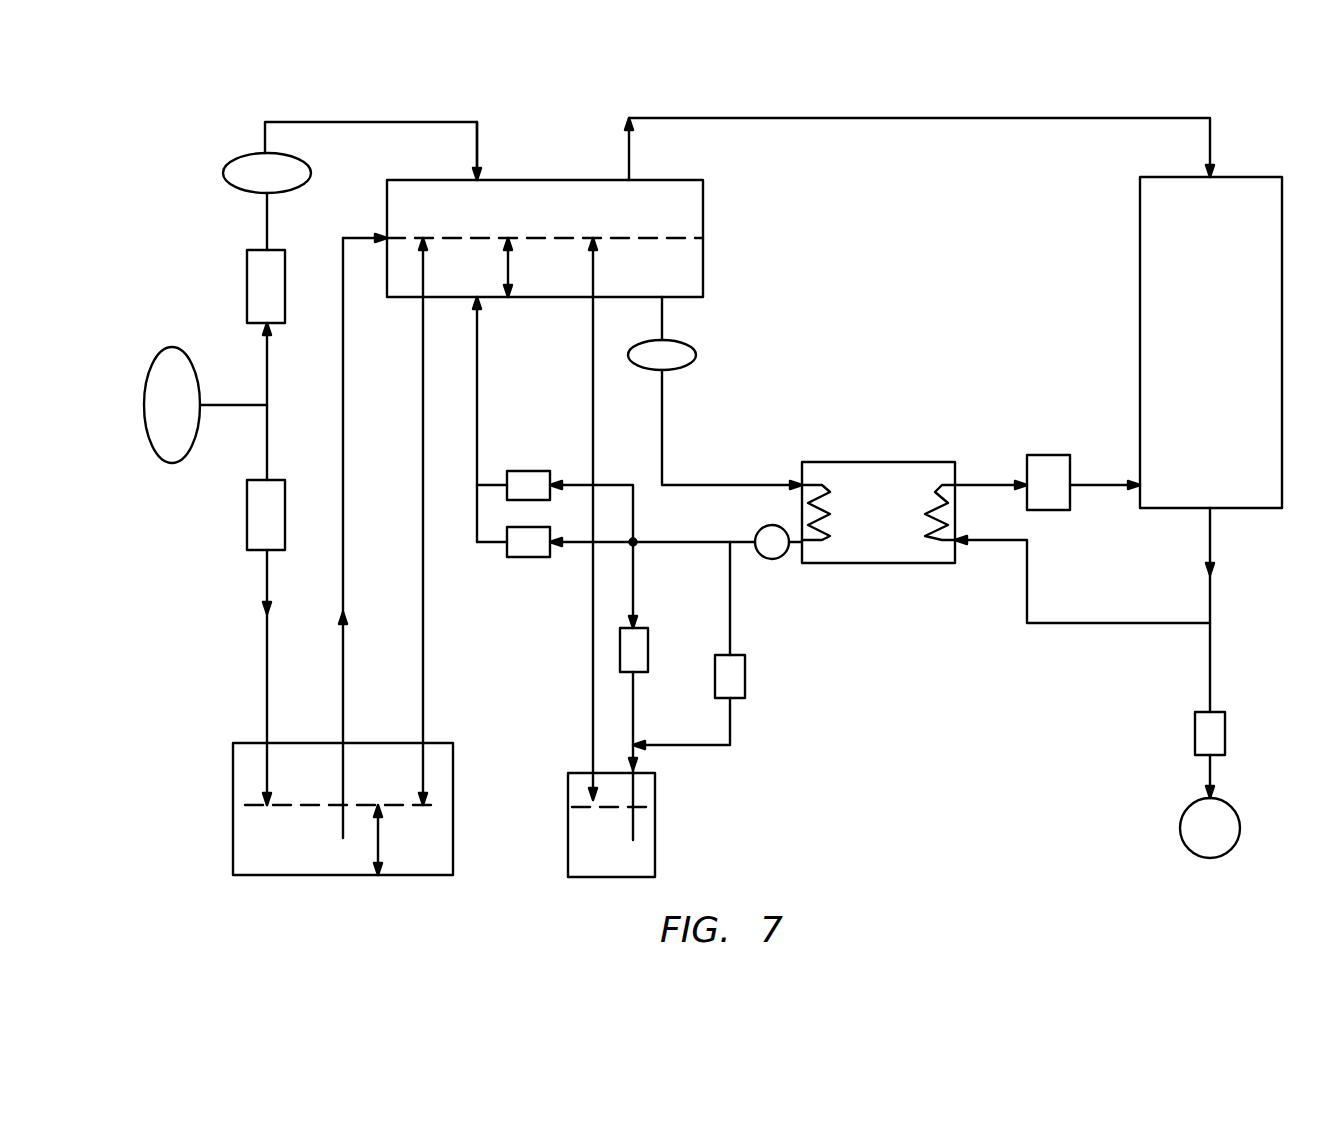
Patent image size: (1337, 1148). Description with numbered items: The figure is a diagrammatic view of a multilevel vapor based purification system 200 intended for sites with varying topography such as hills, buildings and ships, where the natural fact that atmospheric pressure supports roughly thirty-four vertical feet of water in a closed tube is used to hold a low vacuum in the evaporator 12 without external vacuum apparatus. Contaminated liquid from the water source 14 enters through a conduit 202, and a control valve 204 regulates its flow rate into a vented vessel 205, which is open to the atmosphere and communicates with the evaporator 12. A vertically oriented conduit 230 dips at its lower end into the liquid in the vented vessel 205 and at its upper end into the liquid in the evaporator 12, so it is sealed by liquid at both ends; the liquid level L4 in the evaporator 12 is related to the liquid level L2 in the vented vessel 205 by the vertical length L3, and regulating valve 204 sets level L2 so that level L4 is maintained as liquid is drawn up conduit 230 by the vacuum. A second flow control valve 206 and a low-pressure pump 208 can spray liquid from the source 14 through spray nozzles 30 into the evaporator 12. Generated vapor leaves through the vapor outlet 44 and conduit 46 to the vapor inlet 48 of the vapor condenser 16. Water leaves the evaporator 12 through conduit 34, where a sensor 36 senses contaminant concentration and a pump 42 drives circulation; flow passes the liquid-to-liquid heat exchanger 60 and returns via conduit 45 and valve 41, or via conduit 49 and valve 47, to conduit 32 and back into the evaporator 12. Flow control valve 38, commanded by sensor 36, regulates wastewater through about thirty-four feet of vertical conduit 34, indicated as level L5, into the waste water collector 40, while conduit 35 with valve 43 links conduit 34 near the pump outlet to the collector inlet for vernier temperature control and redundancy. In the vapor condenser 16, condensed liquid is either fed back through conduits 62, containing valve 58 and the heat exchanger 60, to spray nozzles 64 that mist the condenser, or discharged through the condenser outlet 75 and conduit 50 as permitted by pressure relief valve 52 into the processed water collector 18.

The multilevel vapor based purification system 200 is at (240, 92).
The low-pressure pump 208 is at (311, 175).
The second flow control valve 206 is at (247, 265).
The water source 14 is at (150, 363).
The conduit 202 is at (265, 458).
The control valve 204 is at (247, 543).
The vented vessel 205 is at (447, 743).
The vertically oriented conduit 230 is at (343, 497).
The evaporator 12 is at (703, 248).
The spray nozzles 30 is at (477, 182).
The vapor outlet 44 is at (629, 182).
The conduit 46 is at (907, 120).
The vapor condenser 16 is at (1140, 245).
The vapor inlet 48 is at (1210, 180).
The conduit 32 is at (477, 358).
The conduit 34 is at (662, 322).
The sensor 36 is at (696, 355).
The valve 41 is at (527, 471).
The conduit 45 is at (614, 485).
The valve 47 is at (518, 557).
The conduit 49 is at (574, 545).
The pump 42 is at (770, 559).
The liquid-to-liquid heat exchanger 60 is at (868, 462).
The valve 58 is at (1050, 455).
The spray nozzles 64 is at (1142, 482).
The conduits 62 is at (1098, 487).
The vapor condenser outlet 75 is at (1210, 503).
The conduit 50 is at (1212, 674).
The pressure relief valve 52 is at (1225, 732).
The processed water collector 18 is at (1240, 824).
The valve 38 is at (648, 658).
The conduit 35 is at (732, 636).
The valve 43 is at (745, 686).
The waste water collector 40 is at (655, 830).
The liquid level L2 is at (398, 840).
The vertical length L3 is at (407, 521).
The liquid level L4 is at (527, 267).
The level L5 is at (577, 519).